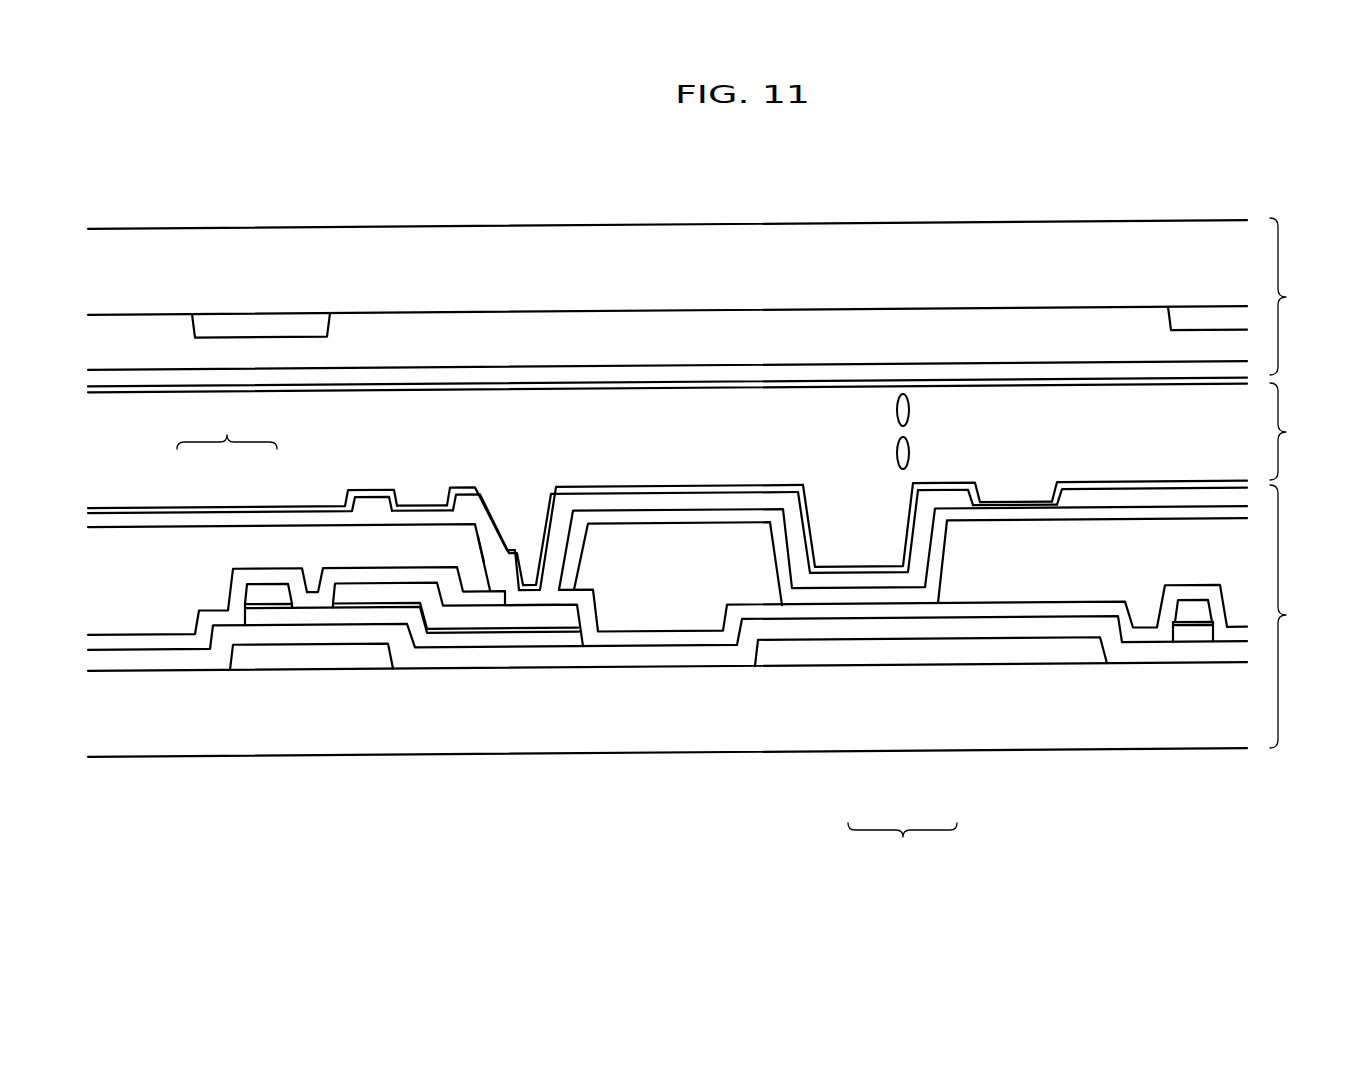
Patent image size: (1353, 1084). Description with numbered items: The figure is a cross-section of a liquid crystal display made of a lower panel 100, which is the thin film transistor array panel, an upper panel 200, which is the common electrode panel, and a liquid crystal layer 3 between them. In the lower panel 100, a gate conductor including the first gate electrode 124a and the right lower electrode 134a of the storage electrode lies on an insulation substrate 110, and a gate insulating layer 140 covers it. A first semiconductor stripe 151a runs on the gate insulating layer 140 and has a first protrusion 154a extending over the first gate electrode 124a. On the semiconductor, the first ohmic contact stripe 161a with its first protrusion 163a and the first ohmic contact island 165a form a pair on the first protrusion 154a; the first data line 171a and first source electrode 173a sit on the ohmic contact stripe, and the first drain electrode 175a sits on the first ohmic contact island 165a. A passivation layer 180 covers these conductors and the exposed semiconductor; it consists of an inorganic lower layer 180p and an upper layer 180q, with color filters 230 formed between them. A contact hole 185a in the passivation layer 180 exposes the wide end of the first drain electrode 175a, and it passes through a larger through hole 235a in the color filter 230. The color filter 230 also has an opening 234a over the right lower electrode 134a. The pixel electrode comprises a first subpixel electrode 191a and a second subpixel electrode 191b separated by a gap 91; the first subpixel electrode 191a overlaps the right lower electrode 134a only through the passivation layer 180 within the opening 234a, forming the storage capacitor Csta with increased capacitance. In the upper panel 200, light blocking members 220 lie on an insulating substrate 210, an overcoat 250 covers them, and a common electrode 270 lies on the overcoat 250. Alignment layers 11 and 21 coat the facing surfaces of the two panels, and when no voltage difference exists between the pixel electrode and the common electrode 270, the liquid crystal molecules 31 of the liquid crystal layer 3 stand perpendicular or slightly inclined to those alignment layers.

The insulating substrate 210 is at (1087, 250).
The light blocking member 220 is at (260, 327).
The overcoat 250 is at (838, 330).
The common electrode 270 is at (641, 372).
The alignment layer 21 is at (1173, 386).
The upper panel 200 is at (1297, 296).
The liquid crystal molecules 31 is at (910, 409).
The liquid crystal layer 3 is at (1286, 431).
The lower panel 100 is at (1297, 616).
The insulation substrate 110 is at (1046, 720).
The first gate electrode 124a is at (344, 660).
The right lower electrode 134a is at (937, 652).
The gate insulating layer 140 is at (740, 656).
The first protrusion 154a is at (437, 640).
The first protrusion 163a is at (276, 608).
The first ohmic contact island 165a is at (476, 628).
The first source electrode 173a is at (258, 592).
The first drain electrode 175a is at (518, 620).
The first semiconductor stripe 151a is at (1177, 640).
The first ohmic contact stripe 161a is at (1205, 632).
The first data line 171a is at (1192, 612).
The passivation layer 180 is at (227, 430).
The lower layer 180p is at (262, 577).
The upper layer 180q is at (195, 522).
The color filter 230 is at (135, 605).
The opening 234a is at (808, 548).
The first subpixel electrode 191a is at (722, 500).
The second subpixel electrode 191b is at (372, 493).
The gap 91 is at (420, 492).
The alignment layer 11 is at (1197, 482).
The contact hole 185a is at (558, 583).
The through hole 235a is at (486, 540).
The storage capacitor Csta is at (902, 843).